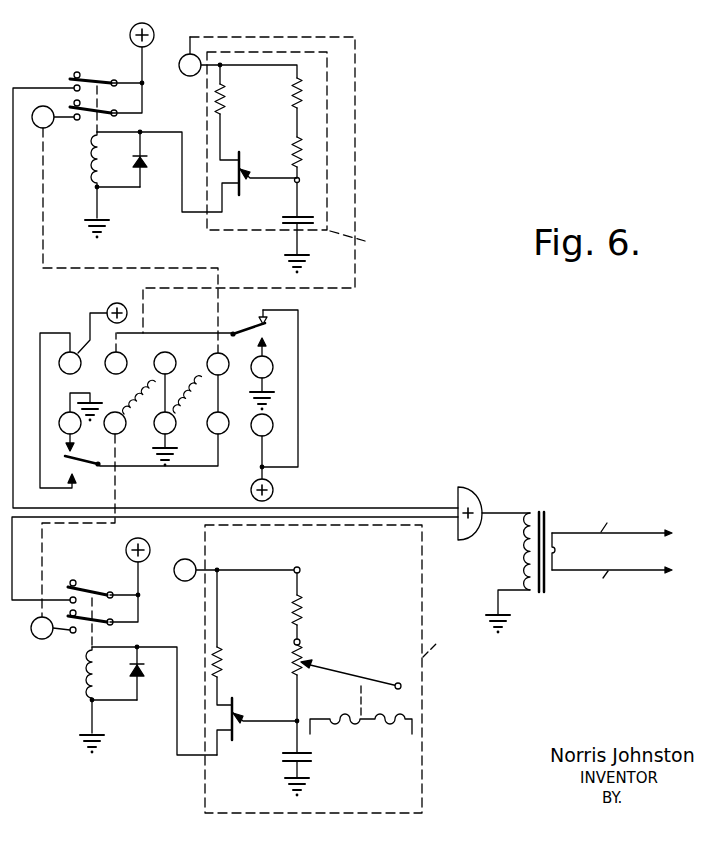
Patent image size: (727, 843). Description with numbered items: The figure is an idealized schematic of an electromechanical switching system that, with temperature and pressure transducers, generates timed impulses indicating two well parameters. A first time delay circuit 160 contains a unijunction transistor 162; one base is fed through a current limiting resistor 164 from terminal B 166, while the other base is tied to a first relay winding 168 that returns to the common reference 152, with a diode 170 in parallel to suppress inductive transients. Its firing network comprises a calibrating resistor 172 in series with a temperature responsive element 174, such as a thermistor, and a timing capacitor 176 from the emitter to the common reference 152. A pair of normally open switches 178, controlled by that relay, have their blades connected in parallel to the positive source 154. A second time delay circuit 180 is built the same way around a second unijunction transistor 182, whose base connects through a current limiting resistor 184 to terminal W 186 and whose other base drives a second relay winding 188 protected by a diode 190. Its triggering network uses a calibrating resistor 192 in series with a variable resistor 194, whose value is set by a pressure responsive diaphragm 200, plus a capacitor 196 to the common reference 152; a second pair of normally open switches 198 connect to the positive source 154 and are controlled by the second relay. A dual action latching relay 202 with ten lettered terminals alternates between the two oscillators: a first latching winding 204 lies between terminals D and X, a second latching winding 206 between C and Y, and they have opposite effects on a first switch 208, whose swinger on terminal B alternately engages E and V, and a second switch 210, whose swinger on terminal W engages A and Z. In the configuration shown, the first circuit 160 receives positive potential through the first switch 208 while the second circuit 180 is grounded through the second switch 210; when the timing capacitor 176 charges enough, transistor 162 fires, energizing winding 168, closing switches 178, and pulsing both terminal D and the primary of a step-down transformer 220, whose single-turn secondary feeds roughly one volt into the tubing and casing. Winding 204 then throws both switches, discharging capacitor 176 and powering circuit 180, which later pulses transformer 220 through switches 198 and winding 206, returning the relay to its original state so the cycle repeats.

The common reference source 152 is at (103, 222).
The positive source 154 is at (133, 28).
The first time delay circuit UJ_I 160 is at (328, 138).
The unijunction transistor 162 is at (241, 152).
The current limiting resistor R1 164 is at (215, 105).
The terminal B 166 is at (184, 54).
The K1 relay winding 168 is at (91, 162).
The diode 170 is at (143, 165).
The calibrating resistor 172 is at (303, 98).
The temperature responsive element RT 174 is at (303, 158).
The timing capacitor CT 176 is at (283, 220).
The pair of normally open switches 178 is at (116, 80).
The second time delay relay circuit UJ_II 180 is at (423, 601).
The second unijunction transistor 182 is at (250, 699).
The current limiting resistor R2 184 is at (212, 652).
The terminal W 186 is at (232, 408).
The K2 relay winding 188 is at (85, 673).
The diode 190 is at (140, 678).
The calibrating resistor 192 is at (301, 614).
The variable resistor Rp 194 is at (303, 661).
The capacitor Cp 196 is at (312, 758).
The second pair of normally open switches 198 is at (116, 590).
The diaphragm 200 is at (361, 720).
The dual action latching relay 202 is at (302, 423).
The first relay winding 204 is at (199, 366).
The second relay winding 206 is at (140, 397).
The switch S1 208 is at (268, 329).
The switch S2 210 is at (78, 462).
The step-down transformer 220 is at (544, 512).